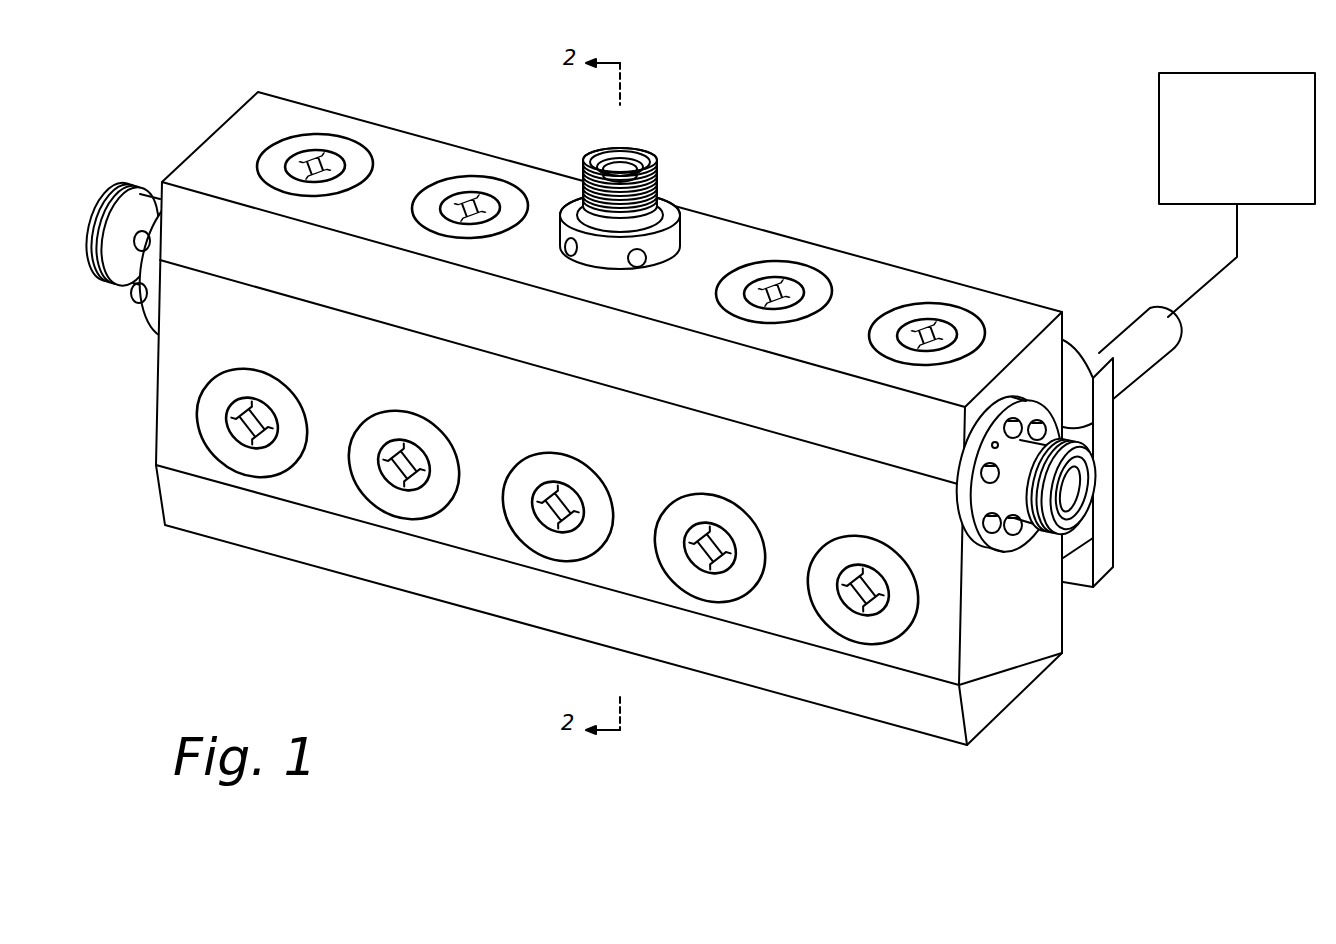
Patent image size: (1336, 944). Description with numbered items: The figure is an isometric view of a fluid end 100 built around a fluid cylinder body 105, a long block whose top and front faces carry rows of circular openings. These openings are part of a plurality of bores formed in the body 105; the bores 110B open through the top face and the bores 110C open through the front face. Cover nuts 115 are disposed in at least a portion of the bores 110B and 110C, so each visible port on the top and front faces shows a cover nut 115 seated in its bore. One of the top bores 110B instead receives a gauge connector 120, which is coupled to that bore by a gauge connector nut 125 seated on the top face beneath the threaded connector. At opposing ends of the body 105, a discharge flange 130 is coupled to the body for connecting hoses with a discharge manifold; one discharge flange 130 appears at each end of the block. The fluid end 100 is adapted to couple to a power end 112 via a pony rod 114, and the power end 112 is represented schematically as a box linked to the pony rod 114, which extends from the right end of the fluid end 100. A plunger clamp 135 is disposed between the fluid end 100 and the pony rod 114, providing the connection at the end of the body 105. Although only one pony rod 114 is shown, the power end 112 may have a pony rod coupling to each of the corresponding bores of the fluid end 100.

The fluid end 100 is at (943, 66).
The fluid cylinder body 105 is at (300, 112).
The bores 110B is at (411, 212).
The bores 110C is at (553, 455).
The power end 112 is at (1256, 155).
The pony rod 114 is at (1152, 378).
The cover nuts 115 is at (353, 163).
The gauge connector 120 is at (634, 150).
The gauge connector nut 125 is at (672, 250).
The discharge flange 130 is at (123, 181).
The plunger clamp 135 is at (1115, 417).